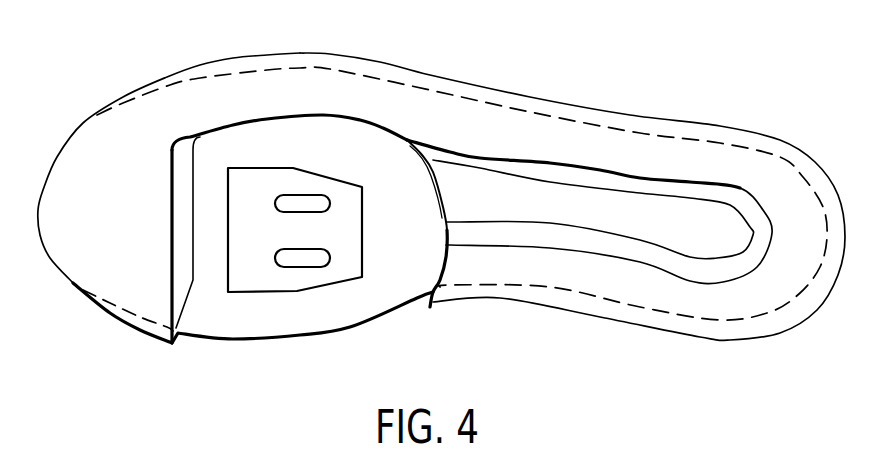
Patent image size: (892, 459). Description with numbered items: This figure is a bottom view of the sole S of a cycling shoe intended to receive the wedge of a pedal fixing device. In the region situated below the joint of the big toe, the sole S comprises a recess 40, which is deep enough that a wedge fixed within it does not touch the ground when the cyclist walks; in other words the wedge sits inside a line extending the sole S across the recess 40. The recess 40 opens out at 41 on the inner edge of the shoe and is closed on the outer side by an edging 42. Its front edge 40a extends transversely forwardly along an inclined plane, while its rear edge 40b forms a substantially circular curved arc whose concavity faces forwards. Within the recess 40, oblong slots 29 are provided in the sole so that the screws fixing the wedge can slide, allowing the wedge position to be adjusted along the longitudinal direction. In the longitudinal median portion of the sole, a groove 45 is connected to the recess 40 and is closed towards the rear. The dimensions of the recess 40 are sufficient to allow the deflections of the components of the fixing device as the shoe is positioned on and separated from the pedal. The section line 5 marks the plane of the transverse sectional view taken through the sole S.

The edging 42 is at (262, 92).
The opening of the recess 41 is at (237, 330).
The recess 40 is at (373, 150).
The front edge of the recess 40a is at (183, 207).
The rear edge of the recess 40b is at (433, 180).
The groove 45 is at (592, 202).
The oblong slots 29 is at (318, 203).
The sole S is at (128, 280).
The section line 5- 5 is at (97, 199).